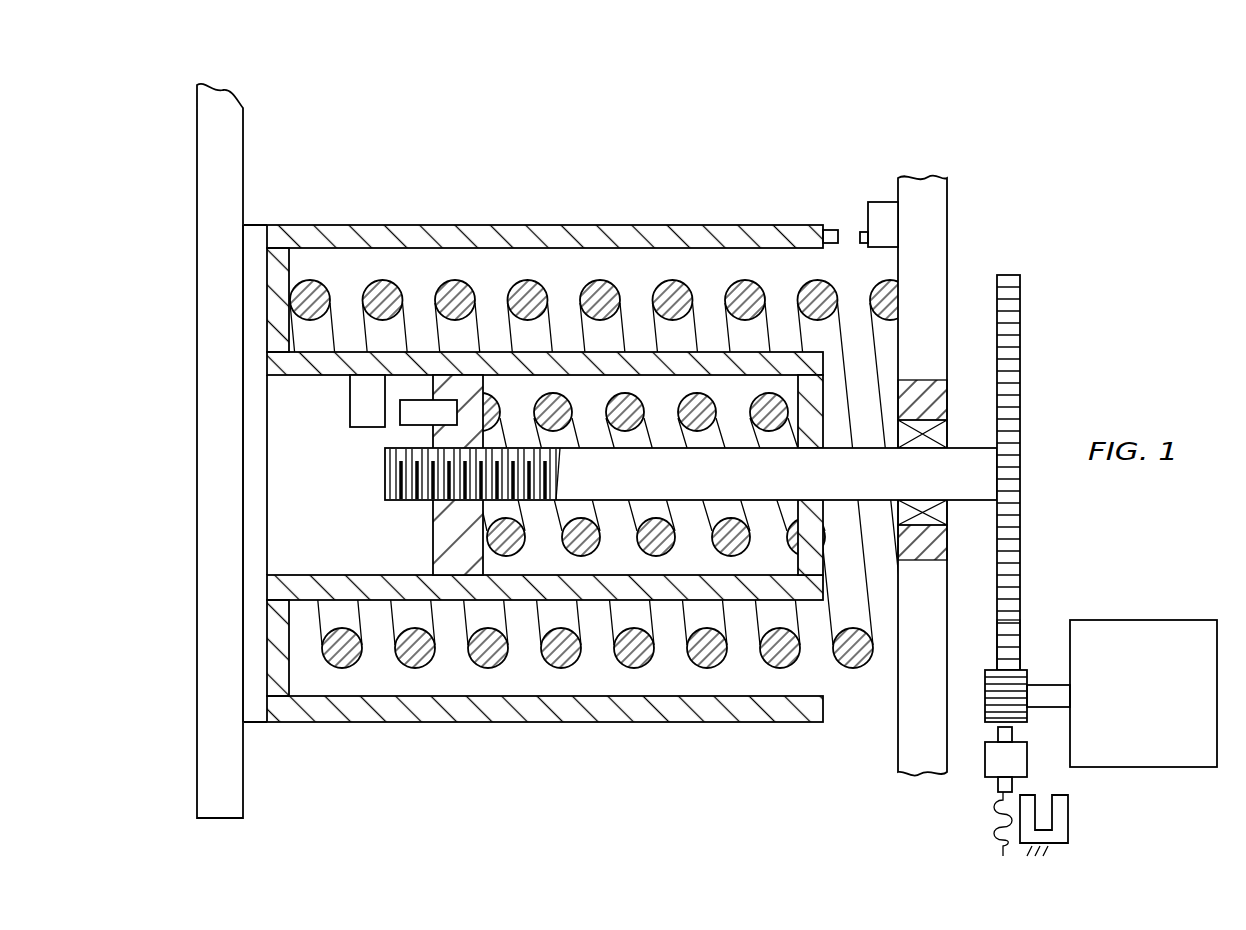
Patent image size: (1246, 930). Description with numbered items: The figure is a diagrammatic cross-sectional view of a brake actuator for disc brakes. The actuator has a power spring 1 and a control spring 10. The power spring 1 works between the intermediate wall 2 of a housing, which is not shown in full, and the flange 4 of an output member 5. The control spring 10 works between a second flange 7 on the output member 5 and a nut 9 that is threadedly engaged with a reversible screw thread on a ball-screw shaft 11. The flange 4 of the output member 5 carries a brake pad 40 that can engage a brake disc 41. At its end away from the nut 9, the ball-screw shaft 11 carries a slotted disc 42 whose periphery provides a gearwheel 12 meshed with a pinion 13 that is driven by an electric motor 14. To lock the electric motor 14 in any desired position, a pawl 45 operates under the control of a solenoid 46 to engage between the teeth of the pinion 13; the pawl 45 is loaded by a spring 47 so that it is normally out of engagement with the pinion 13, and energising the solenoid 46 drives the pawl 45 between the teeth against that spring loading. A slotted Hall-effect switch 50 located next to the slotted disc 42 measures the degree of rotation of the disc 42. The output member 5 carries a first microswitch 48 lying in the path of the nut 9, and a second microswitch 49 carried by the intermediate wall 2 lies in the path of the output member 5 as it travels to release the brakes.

The power spring 1 is at (641, 670).
The intermediate wall 2 is at (923, 265).
The flange 4 is at (292, 268).
The output member 5 is at (619, 365).
The second flange 7 is at (811, 432).
The nut 9 is at (445, 553).
The control spring 10 is at (674, 429).
The ball-screw shaft 11 is at (378, 485).
The gearwheel 12 is at (1017, 654).
The pinion 13 is at (1000, 683).
The electric motor 14 is at (1160, 708).
The brake pad 40 is at (246, 679).
The brake disc 41 is at (230, 178).
The slotted disc 42 is at (1012, 322).
The pawl 45 is at (998, 735).
The solenoid 46 is at (1007, 762).
The spring 47 is at (997, 818).
The first microswitch 48 is at (356, 410).
The second microswitch 49 is at (885, 227).
The slotted Hall-effect switch 50 is at (1062, 816).